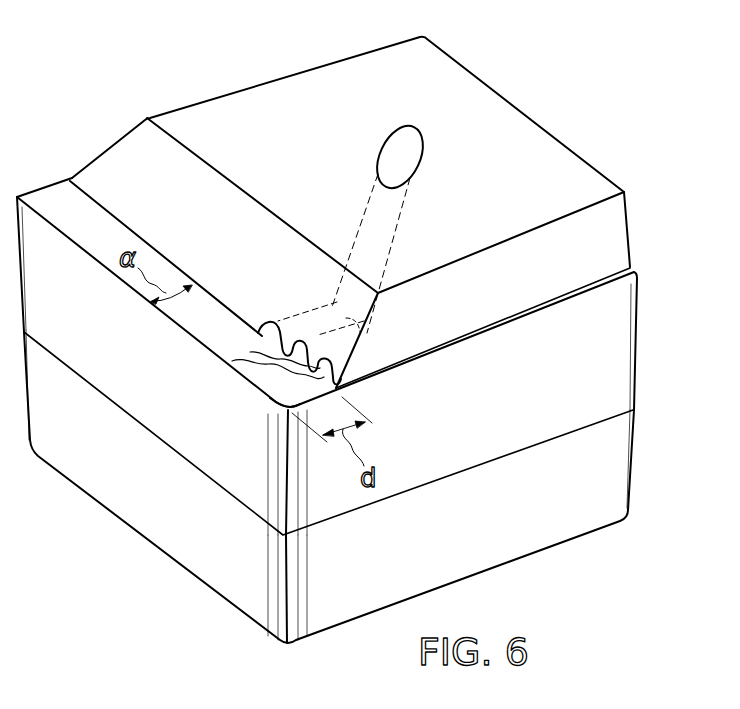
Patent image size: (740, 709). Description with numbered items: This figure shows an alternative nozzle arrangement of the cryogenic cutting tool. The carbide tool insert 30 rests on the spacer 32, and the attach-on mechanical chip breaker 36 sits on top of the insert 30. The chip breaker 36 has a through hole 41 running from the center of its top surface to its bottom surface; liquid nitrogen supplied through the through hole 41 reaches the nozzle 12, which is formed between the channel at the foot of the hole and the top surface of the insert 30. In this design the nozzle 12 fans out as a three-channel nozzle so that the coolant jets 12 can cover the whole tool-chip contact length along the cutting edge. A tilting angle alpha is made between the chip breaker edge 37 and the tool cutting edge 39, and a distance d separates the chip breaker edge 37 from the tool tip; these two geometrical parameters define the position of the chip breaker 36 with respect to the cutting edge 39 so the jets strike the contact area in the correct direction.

The nozzle 12 is at (250, 352).
The carbide tool insert 30 is at (618, 353).
The spacer 32 is at (617, 472).
The chip breaker 36 is at (618, 233).
The chip breaker edge 37 is at (107, 216).
The tool cutting edge 39 is at (266, 400).
The through hole 41 is at (421, 153).